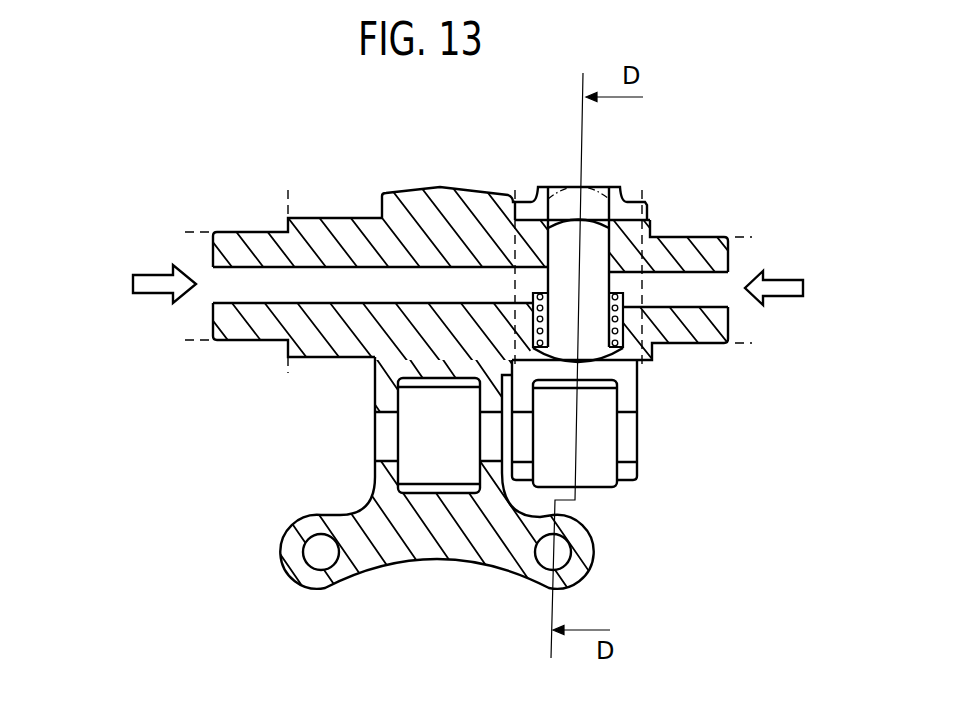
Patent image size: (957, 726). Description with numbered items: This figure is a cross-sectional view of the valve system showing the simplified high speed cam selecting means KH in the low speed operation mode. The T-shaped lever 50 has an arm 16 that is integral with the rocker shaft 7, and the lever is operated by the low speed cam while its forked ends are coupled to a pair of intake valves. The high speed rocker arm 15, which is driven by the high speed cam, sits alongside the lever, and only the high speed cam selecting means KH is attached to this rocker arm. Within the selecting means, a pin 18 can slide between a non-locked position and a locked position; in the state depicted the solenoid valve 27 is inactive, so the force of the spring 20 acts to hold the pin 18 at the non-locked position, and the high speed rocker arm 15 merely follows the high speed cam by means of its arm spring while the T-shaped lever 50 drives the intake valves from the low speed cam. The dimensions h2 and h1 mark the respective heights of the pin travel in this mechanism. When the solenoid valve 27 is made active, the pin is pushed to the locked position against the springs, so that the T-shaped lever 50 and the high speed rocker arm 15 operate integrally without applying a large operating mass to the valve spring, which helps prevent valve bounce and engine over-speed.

The rocker shaft 7 is at (252, 247).
The arm 16 is at (393, 195).
The pin 18 is at (573, 187).
The high speed cam selecting means KH is at (605, 176).
The head height h2 is at (658, 188).
The shoulder height h1 is at (658, 222).
The spring 20 is at (647, 351).
The high speed rocker arm 15 is at (631, 474).
The T-shaped lever 50 is at (316, 420).
The solenoid valve 27 is at (467, 287).